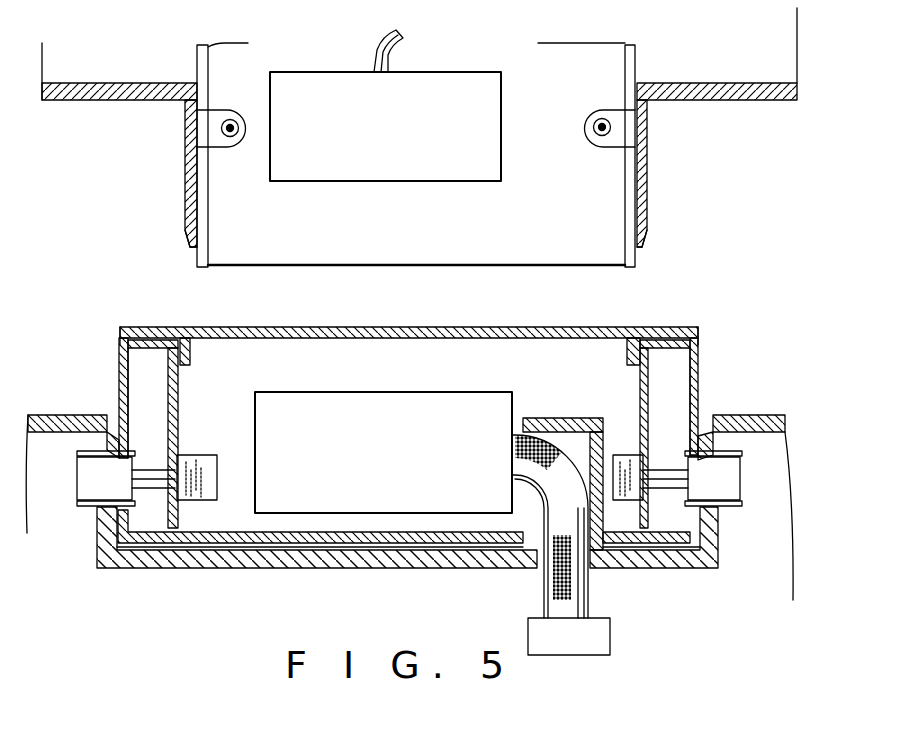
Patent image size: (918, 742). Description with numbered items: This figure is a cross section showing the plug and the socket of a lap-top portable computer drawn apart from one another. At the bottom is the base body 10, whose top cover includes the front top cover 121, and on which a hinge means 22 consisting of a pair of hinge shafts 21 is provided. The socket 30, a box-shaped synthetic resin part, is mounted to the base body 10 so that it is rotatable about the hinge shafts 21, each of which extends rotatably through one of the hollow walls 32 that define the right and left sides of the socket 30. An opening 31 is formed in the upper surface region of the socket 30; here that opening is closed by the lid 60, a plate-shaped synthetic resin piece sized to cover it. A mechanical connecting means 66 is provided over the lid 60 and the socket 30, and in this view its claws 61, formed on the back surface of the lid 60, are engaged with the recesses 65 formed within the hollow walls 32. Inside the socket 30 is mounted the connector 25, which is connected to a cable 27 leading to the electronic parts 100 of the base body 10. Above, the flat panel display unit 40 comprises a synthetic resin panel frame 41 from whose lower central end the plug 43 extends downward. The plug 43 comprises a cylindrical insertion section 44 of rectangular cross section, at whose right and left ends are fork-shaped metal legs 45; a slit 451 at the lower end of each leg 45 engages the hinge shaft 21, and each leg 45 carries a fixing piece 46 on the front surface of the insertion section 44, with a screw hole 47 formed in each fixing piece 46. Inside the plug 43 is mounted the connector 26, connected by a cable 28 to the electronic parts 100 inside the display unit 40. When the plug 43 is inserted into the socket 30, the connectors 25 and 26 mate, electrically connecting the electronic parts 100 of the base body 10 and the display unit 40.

The base body 10 is at (780, 402).
The front top cover 121 is at (745, 418).
The hinge shaft 21 is at (95, 480).
The hinge means 22 is at (740, 510).
The connector 25 is at (390, 500).
The connector 26 is at (490, 158).
The cable 27 is at (555, 590).
The cable 28 is at (385, 48).
The socket 30 is at (700, 341).
The opening 31 is at (123, 326).
The hollow wall 32 is at (118, 368).
The flat panel display unit 40 is at (799, 50).
The panel frame 41 is at (795, 88).
The plug 43 is at (654, 128).
The insertion section 44 is at (650, 200).
The leg 45 is at (200, 190).
The slit 451 is at (200, 256).
The fixing piece 46 is at (206, 127).
The screw hole 47 is at (225, 122).
The lid 60 is at (392, 327).
The claw 61 is at (188, 362).
The recess 65 is at (167, 362).
The mechanical connecting means 66 is at (606, 357).
The electronic parts 100 is at (597, 632).